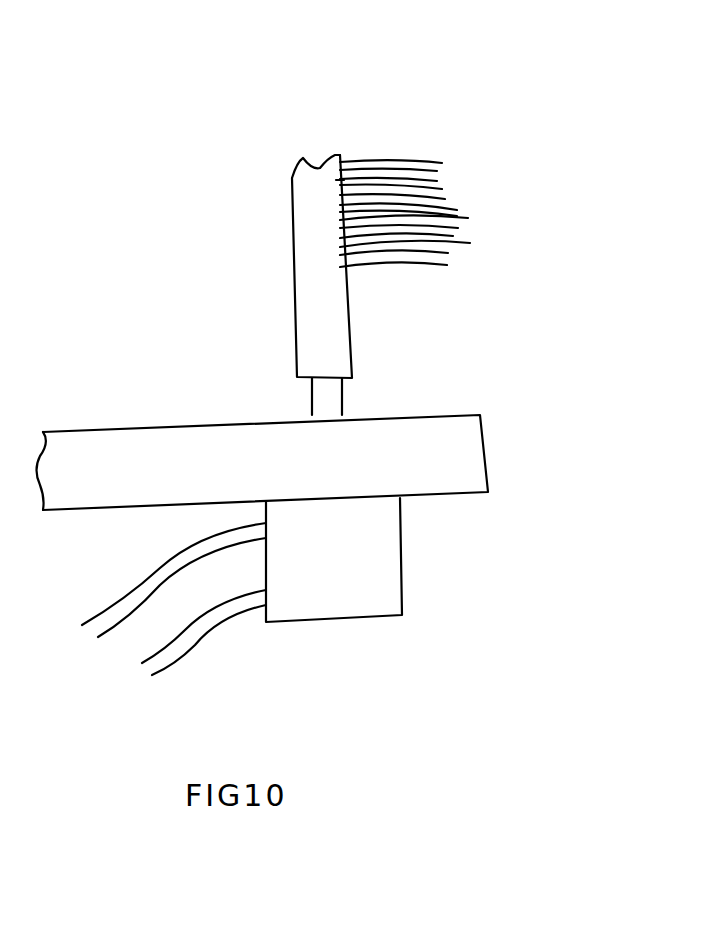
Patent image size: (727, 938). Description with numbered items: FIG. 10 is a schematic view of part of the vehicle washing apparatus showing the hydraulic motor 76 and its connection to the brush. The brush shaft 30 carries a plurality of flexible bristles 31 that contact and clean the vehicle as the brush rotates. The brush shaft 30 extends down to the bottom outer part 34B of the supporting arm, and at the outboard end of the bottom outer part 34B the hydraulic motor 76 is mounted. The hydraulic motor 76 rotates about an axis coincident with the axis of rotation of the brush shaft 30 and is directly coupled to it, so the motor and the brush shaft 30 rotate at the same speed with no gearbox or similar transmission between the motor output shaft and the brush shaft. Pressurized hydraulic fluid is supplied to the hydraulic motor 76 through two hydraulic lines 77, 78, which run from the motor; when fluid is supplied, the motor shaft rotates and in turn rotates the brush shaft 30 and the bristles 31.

The flexible bristles 31 is at (422, 218).
The brush shaft 30 is at (333, 362).
The bottom outer part 34B is at (455, 455).
The hydraulic motor 76 is at (335, 610).
The hydraulic line 77 is at (215, 630).
The hydraulic line 78 is at (137, 582).